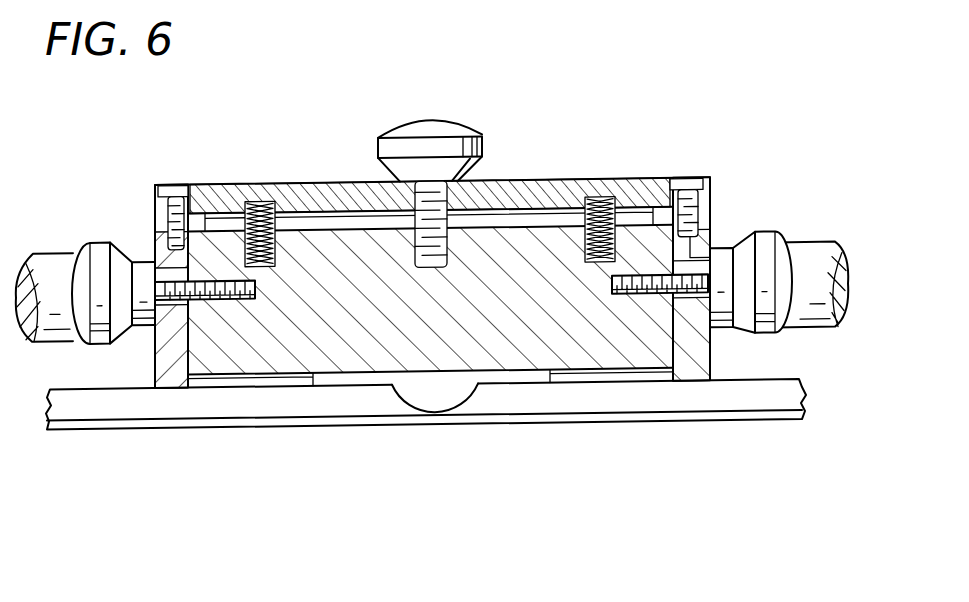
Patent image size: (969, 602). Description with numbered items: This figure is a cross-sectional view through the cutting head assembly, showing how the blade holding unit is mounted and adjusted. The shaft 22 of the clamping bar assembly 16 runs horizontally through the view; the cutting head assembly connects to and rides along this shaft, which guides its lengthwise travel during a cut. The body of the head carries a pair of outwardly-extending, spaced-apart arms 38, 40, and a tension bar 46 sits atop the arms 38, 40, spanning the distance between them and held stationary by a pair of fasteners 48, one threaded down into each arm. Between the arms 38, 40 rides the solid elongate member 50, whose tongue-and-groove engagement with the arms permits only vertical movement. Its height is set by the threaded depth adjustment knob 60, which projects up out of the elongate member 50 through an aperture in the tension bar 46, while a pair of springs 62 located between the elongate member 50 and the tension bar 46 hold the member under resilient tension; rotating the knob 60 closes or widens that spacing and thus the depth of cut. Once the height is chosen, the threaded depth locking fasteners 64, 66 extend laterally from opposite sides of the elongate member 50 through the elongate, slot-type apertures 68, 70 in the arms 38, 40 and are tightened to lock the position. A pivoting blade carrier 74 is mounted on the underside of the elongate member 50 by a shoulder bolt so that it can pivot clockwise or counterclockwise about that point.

The clamping bar assembly 16 is at (533, 397).
The shaft 22 is at (810, 250).
The arm 38 is at (700, 375).
The arm 40 is at (168, 380).
The tension bar 46 is at (538, 183).
The fasteners 48 is at (183, 187).
The elongate member 50 is at (312, 355).
The depth adjustment knob 60 is at (428, 127).
The springs 62 is at (266, 205).
The depth locking fastener 64 is at (100, 243).
The depth locking fastener 66 is at (770, 233).
The slot-type aperture 68 is at (168, 312).
The slot-type aperture 70 is at (697, 267).
The blade carrier 74 is at (443, 397).